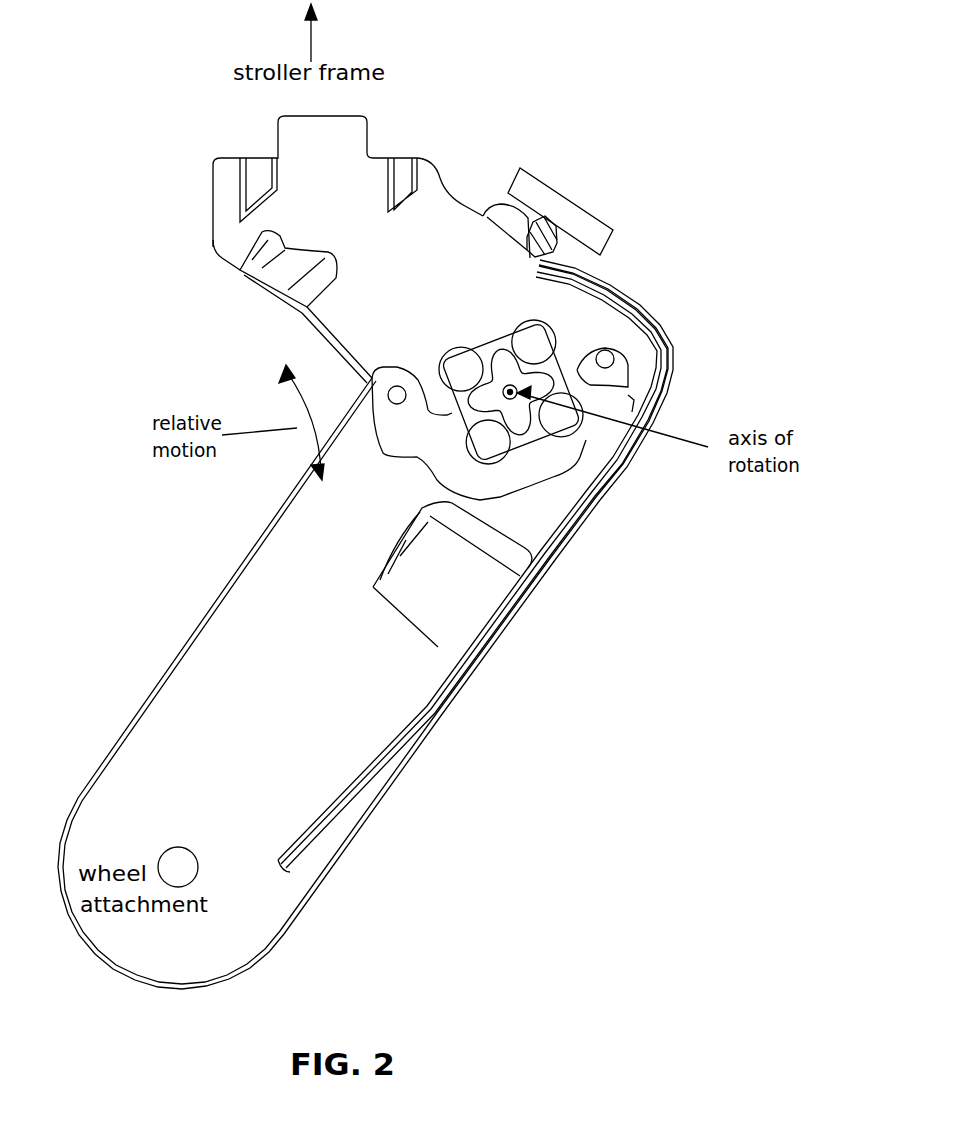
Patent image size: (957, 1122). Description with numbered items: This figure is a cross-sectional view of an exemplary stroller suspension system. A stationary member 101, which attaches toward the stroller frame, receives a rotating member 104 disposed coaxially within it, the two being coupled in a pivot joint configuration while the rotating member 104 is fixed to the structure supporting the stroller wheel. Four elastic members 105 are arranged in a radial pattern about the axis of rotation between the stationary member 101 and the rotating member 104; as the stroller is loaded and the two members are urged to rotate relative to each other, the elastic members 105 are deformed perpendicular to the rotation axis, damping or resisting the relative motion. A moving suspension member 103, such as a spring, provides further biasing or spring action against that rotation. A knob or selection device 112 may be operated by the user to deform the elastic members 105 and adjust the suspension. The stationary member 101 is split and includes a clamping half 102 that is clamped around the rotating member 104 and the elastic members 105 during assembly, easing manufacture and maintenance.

The stationary member 101 is at (442, 257).
The selection device 112 is at (550, 200).
The clamping half 102 is at (573, 437).
The elastic members 105 is at (560, 398).
The rotating member 104 is at (290, 729).
The moving suspension member 103 is at (475, 528).